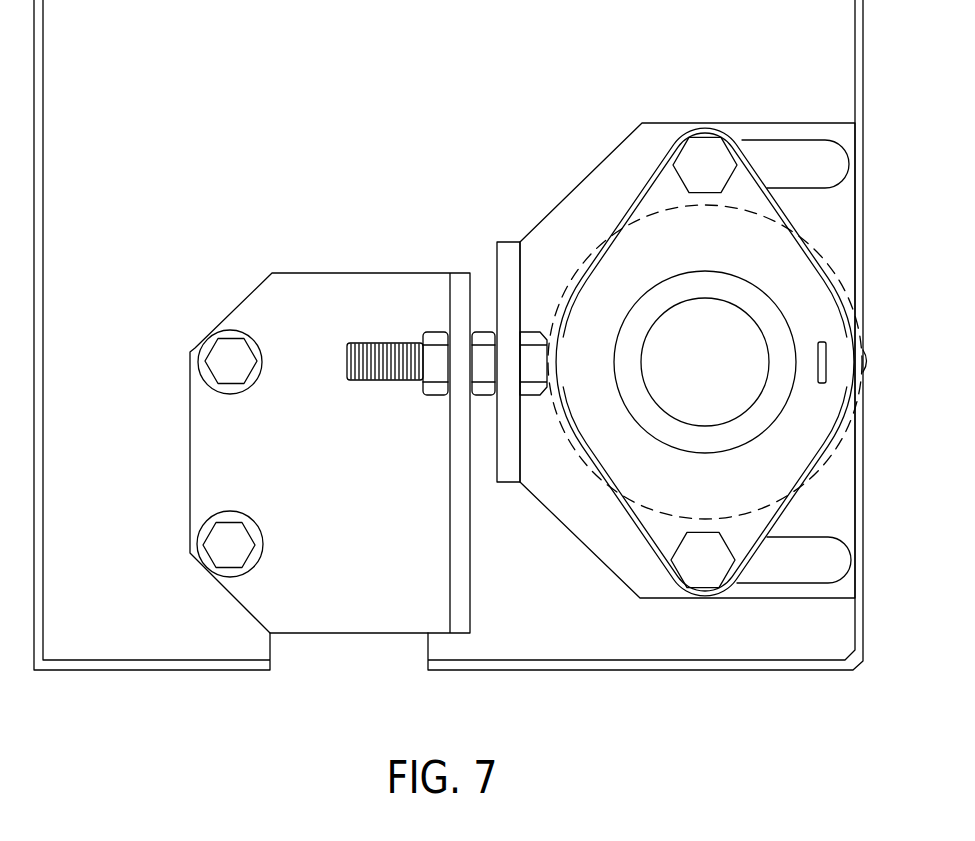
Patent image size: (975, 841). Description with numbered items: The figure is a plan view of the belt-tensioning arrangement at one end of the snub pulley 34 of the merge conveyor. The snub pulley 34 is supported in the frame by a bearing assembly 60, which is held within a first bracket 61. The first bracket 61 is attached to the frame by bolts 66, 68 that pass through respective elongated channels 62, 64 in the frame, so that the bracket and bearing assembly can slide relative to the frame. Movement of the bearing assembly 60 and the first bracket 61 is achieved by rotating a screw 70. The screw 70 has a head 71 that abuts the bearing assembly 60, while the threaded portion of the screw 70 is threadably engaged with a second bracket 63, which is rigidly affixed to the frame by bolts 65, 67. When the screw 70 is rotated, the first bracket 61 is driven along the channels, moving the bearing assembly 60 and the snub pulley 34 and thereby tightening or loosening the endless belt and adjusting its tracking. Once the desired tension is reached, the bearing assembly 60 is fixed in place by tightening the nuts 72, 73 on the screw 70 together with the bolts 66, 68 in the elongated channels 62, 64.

The snub pulley 34 is at (843, 441).
The bearing assembly 60 is at (757, 527).
The first bracket 61 is at (568, 213).
The elongated channel 62 is at (823, 155).
The second bracket 63 is at (323, 283).
The elongated channel 64 is at (823, 550).
The bolt 65 is at (222, 365).
The bolt 66 is at (705, 160).
The bolt 67 is at (222, 540).
The bolt 68 is at (700, 572).
The screw 70 is at (407, 344).
The head 71 is at (527, 331).
The nut 72 is at (484, 330).
The nut 73 is at (433, 396).